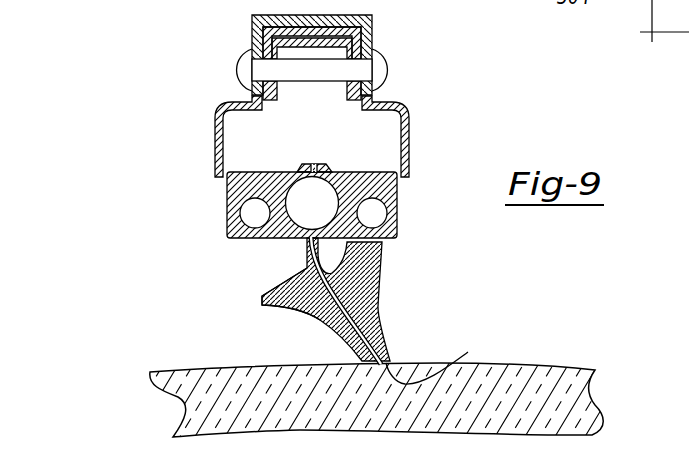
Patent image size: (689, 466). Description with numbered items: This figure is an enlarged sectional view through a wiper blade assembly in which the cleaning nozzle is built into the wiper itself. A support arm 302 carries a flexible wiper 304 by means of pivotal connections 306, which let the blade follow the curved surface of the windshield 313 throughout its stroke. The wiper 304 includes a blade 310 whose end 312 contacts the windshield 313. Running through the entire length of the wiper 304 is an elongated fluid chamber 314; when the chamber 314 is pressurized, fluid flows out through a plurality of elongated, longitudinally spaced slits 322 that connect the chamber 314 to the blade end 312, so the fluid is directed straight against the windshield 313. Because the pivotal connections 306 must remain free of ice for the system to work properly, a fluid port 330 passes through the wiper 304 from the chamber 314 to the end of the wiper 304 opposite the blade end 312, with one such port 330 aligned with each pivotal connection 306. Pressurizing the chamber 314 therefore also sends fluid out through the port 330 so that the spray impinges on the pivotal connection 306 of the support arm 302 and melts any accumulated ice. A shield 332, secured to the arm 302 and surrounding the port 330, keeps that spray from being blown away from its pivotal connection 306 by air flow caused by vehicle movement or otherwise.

The support arm 302 is at (371, 32).
The pivotal connection 306 is at (242, 62).
The shield 332 is at (214, 137).
The fluid port 330 is at (328, 168).
The elongated fluid chamber 314 is at (302, 212).
The flexible wiper 304 is at (373, 270).
The slit 322 is at (373, 307).
The blade 310 is at (297, 310).
The blade end 312 is at (443, 358).
The windshield 313 is at (540, 368).